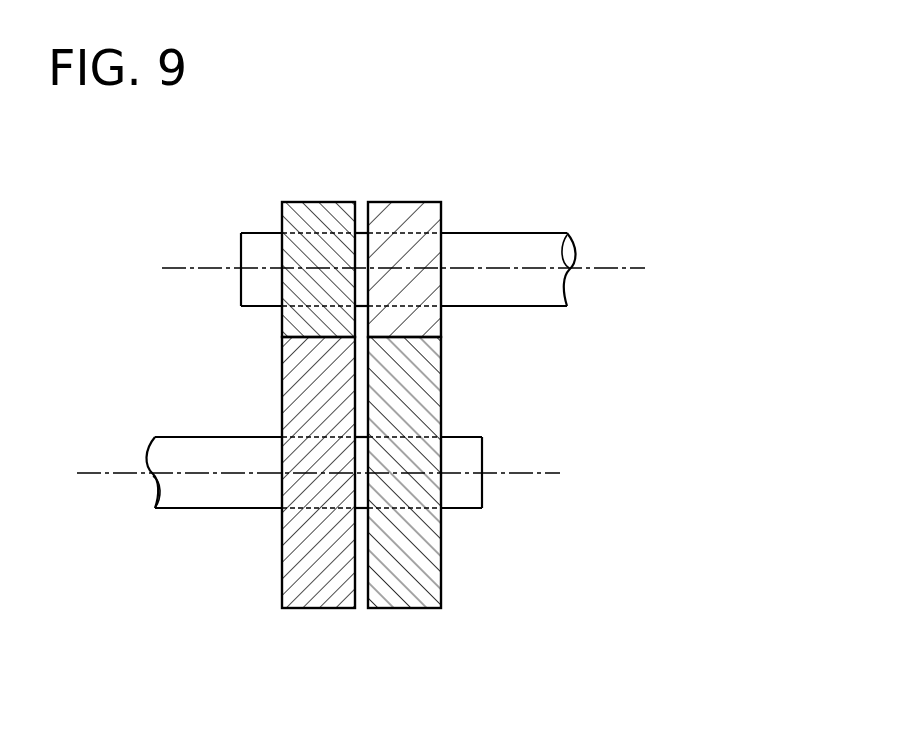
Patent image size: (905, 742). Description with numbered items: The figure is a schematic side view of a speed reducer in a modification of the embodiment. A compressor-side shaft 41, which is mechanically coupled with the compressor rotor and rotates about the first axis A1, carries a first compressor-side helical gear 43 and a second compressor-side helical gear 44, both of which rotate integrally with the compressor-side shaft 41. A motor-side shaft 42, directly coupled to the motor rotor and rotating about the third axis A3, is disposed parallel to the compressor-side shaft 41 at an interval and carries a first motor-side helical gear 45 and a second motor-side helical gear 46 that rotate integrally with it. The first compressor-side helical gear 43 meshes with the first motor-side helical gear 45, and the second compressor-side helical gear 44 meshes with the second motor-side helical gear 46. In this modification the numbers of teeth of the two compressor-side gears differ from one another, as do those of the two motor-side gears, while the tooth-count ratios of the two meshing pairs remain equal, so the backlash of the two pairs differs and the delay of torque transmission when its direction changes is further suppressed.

The compressor-side shaft 41 is at (497, 233).
The motor-side shaft 42 is at (218, 510).
The first compressor-side helical gear 43 is at (405, 202).
The second compressor-side helical gear 44 is at (313, 202).
The first motor-side helical gear 45 is at (405, 610).
The second motor-side helical gear 46 is at (313, 610).
The first axis A1 is at (178, 268).
The third axis A3 is at (547, 473).